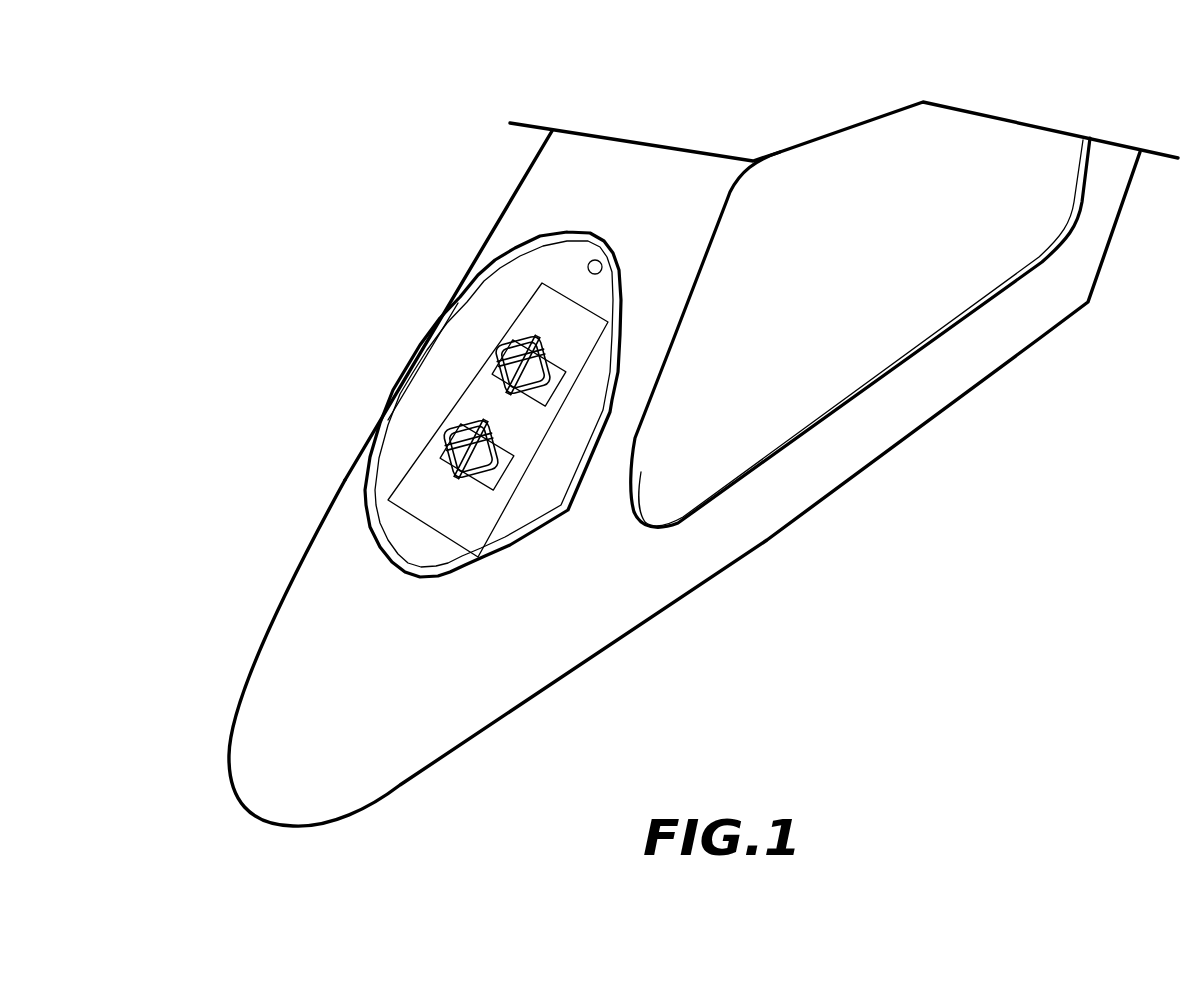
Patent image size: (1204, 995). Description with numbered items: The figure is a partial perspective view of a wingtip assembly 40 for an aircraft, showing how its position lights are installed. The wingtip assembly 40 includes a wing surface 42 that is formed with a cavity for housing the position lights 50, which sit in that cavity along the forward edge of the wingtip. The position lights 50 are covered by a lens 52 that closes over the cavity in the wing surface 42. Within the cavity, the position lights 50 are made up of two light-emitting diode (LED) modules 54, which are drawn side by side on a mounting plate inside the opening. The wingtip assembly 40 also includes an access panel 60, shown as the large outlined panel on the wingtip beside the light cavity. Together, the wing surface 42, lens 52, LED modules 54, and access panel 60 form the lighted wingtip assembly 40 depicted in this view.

The wingtip assembly 40 is at (703, 464).
The wing surface 42 is at (517, 217).
The position lights 50 is at (427, 404).
The lens 52 is at (414, 372).
The light-emitting diode (LED) modules 54 is at (592, 498).
The access panel 60 is at (860, 332).